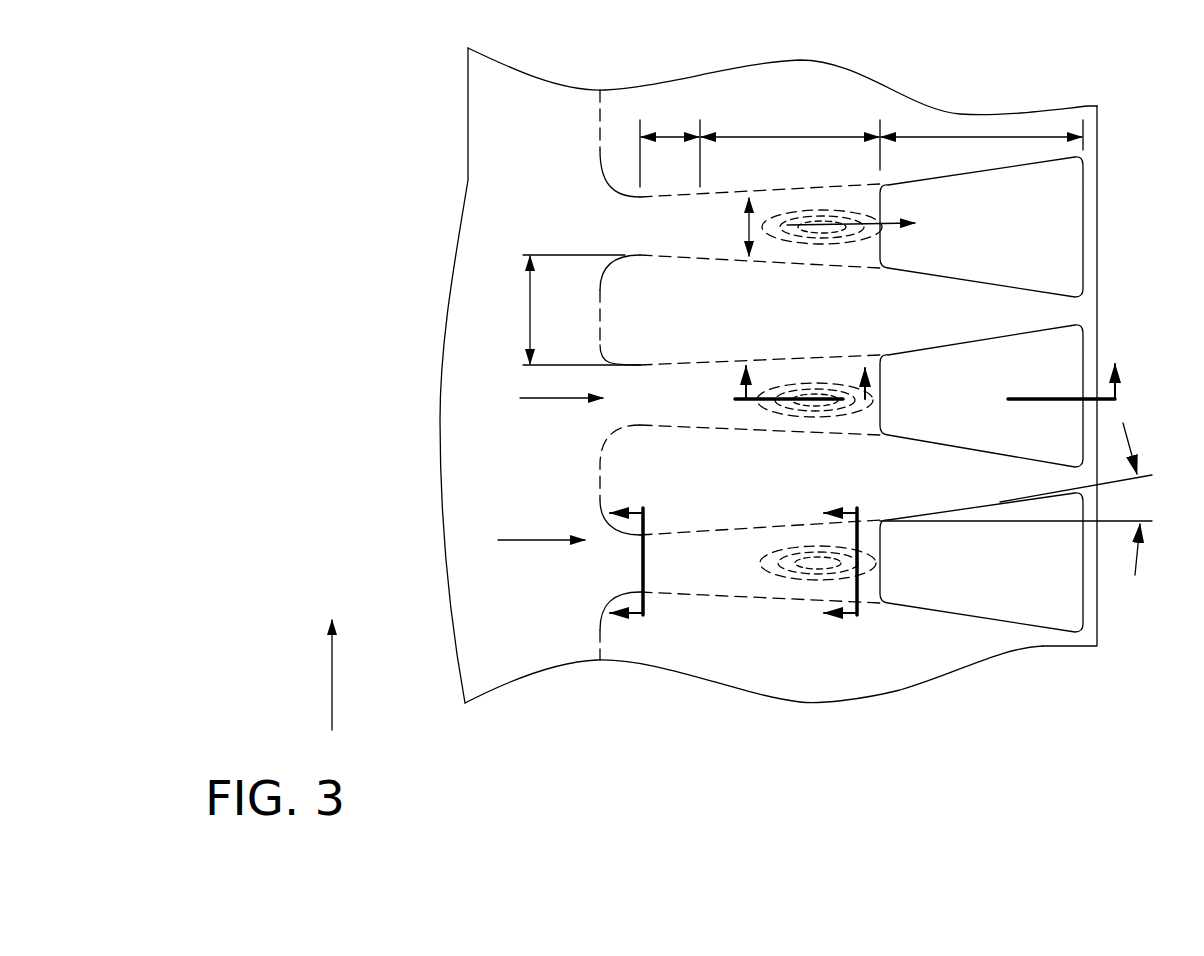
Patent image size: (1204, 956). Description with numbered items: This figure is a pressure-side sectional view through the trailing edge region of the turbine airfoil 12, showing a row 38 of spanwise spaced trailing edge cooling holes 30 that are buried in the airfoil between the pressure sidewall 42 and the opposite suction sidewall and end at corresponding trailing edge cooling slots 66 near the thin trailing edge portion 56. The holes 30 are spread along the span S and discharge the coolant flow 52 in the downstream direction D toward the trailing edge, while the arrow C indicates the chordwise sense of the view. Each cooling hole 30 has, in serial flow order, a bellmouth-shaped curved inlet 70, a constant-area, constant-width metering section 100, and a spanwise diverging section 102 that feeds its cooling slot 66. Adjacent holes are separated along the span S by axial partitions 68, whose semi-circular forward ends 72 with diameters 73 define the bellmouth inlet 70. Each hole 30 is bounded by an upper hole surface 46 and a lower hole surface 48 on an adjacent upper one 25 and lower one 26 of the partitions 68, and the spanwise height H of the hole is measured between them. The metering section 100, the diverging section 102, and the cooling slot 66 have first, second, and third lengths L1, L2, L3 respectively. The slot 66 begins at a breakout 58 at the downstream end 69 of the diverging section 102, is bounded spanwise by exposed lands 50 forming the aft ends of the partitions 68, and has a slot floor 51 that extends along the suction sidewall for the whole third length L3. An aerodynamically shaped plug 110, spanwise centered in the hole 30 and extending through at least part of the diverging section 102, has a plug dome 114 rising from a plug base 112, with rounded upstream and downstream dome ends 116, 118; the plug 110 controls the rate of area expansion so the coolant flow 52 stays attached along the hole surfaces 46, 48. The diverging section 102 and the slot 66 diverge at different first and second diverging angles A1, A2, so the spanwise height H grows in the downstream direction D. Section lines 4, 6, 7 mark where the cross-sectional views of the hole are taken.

The turbine airfoil 12 is at (918, 98).
The upper one of the axial partitions 25 is at (707, 490).
The lower one of the axial partitions 26 is at (775, 656).
The trailing edge cooling hole 30 is at (740, 250).
The row of trailing edge cooling holes 38 is at (787, 620).
The pressure sidewall 42 is at (533, 74).
The upper hole surface 46 is at (783, 527).
The lower hole surface 48 is at (742, 596).
The exposed lands 50 is at (957, 307).
The slot floor 51 is at (1020, 252).
The coolant flow 52 is at (893, 230).
The trailing edge portion 56 is at (1083, 105).
The breakout 58 is at (883, 377).
The trailing edge cooling slot 66 is at (1070, 208).
The axial partition 68 is at (823, 296).
The downstream end of the diverging section 69 is at (883, 433).
The curved inlet 70 is at (622, 230).
The forward ends of the partitions 72 is at (600, 150).
The diameters 73 is at (530, 307).
The metering section 100 is at (677, 241).
The diverging section 102 is at (877, 206).
The plug 110 is at (810, 203).
The plug base 112 is at (790, 258).
The plug dome 114 is at (850, 270).
The upstream dome end 116 is at (762, 533).
The downstream dome end 118 is at (868, 562).
The section line 4- 4 is at (930, 391).
The section line 6- 6 is at (626, 566).
The section line 7- 7 is at (847, 572).
The spanwise height H is at (745, 228).
The first length L1 is at (673, 130).
The second length L2 is at (790, 136).
The third length L3 is at (978, 133).
The first diverging angle A1 is at (861, 343).
The second diverging angle A2 is at (1128, 444).
The circumferential direction C is at (530, 539).
The downstream direction D is at (552, 399).
The span S is at (332, 686).